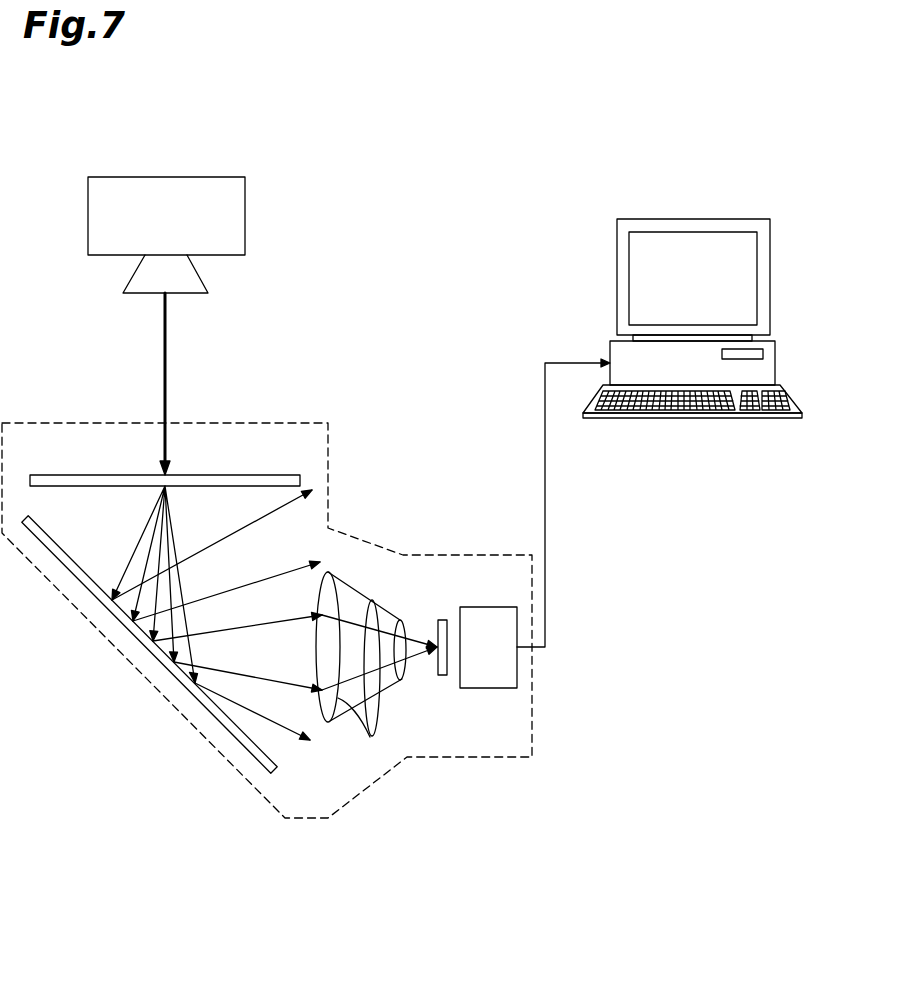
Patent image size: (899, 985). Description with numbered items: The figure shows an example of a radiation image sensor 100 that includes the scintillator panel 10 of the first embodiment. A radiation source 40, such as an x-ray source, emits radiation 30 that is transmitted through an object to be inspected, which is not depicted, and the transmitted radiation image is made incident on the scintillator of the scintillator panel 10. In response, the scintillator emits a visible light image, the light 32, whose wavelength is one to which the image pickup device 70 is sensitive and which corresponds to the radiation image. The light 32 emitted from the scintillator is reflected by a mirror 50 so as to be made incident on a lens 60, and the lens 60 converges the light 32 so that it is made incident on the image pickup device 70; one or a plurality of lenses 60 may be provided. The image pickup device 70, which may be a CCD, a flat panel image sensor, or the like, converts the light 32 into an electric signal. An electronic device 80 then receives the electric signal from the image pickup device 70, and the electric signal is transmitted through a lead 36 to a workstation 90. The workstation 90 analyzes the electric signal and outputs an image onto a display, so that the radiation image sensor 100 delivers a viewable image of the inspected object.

The scintillator panel 10 is at (262, 475).
The radiation 30 is at (168, 357).
The light 32 is at (138, 545).
The lead 36 is at (545, 508).
The radiation source 40 is at (210, 177).
The mirror 50 is at (275, 762).
The lens 60 is at (390, 688).
The image pickup device 70 is at (441, 679).
The electronic device 80 is at (488, 690).
The workstation 90 is at (742, 206).
The radiation image sensor 100 is at (135, 668).